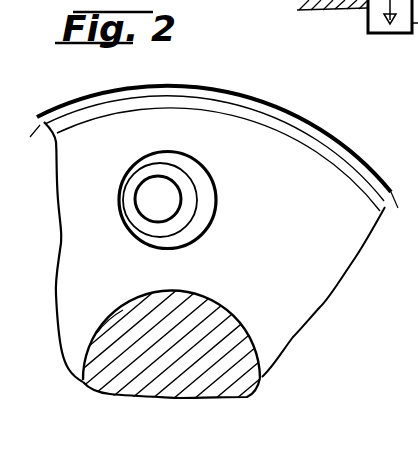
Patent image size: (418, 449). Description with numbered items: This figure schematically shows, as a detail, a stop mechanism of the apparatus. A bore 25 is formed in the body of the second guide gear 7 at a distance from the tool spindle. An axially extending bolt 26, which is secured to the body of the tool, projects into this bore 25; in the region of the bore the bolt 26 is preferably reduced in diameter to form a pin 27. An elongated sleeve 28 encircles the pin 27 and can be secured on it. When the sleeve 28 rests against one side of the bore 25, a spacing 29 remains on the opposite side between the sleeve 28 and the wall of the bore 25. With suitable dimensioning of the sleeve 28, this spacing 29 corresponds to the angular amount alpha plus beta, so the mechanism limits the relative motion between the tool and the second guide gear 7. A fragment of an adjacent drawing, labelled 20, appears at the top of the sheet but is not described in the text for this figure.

The second guide gear 7 is at (271, 239).
The bore 25 is at (192, 230).
The bolt 26 is at (124, 217).
The pin 27 is at (146, 201).
The sleeve 28 is at (126, 185).
The spacing 29 is at (203, 188).
The adjusting member 20 is at (311, 0).